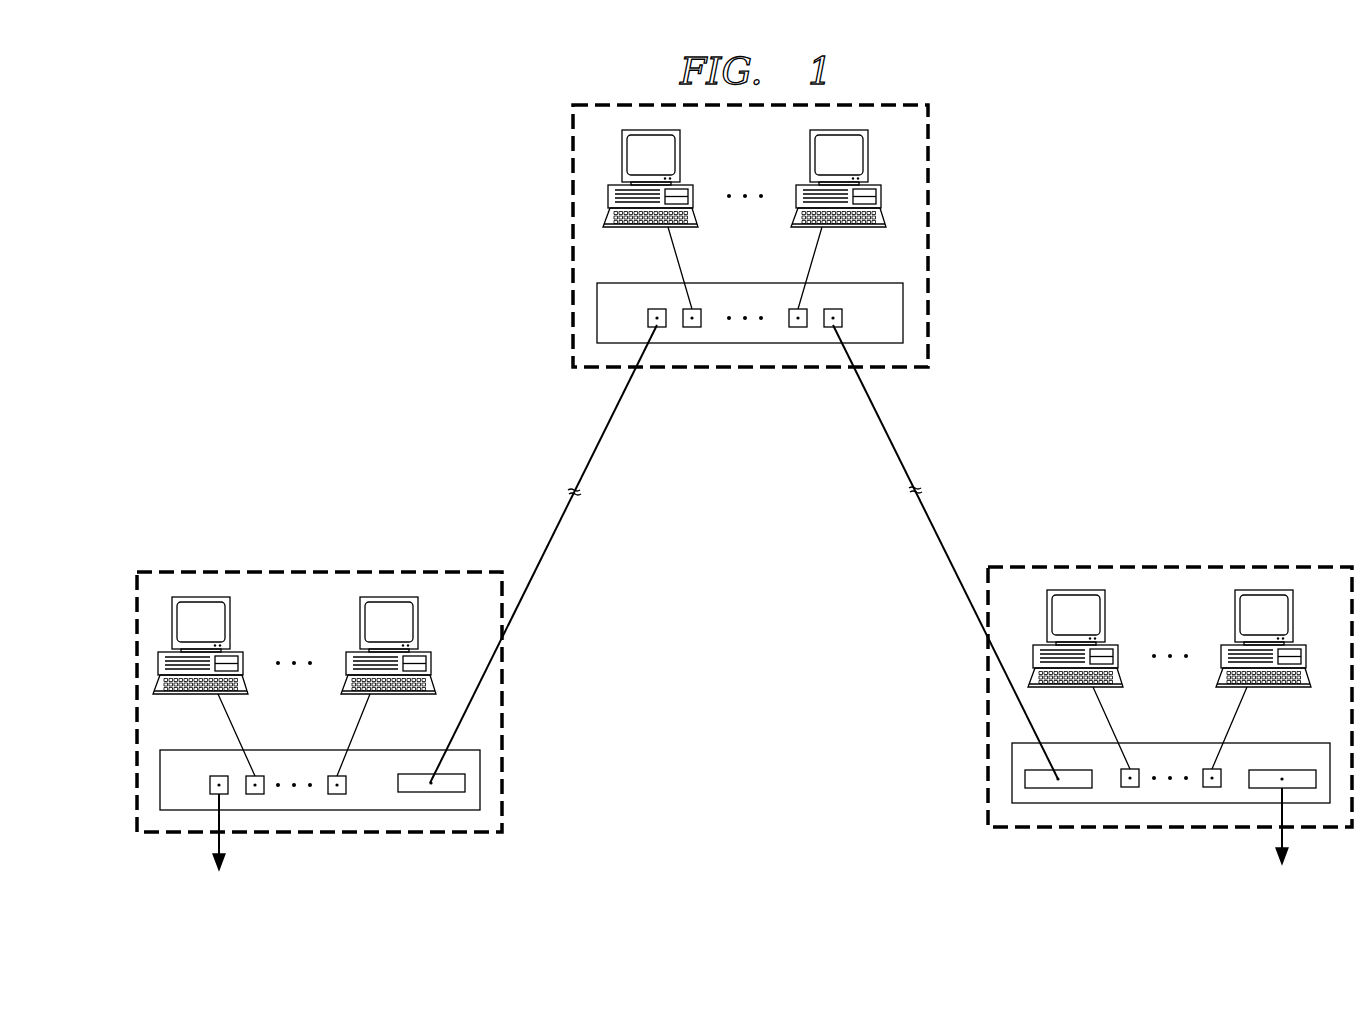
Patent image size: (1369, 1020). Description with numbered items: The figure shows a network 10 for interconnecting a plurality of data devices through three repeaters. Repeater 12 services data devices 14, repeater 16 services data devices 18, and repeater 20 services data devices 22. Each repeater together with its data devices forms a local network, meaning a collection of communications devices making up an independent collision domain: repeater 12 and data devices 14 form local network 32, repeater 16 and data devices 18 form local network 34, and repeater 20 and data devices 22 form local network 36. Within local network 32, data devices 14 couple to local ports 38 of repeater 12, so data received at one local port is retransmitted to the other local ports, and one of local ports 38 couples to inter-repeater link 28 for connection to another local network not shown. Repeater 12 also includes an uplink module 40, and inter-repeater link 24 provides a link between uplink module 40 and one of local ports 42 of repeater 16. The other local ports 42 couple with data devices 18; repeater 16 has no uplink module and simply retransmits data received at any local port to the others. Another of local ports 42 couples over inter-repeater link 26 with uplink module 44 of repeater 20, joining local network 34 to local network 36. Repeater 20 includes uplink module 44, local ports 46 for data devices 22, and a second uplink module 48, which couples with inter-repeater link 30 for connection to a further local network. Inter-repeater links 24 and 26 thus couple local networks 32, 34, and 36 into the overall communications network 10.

The network 10 is at (382, 128).
The repeater 12 is at (390, 750).
The data devices 14 is at (231, 617).
The repeater 16 is at (885, 283).
The data devices 18 is at (681, 150).
The repeater 20 is at (1280, 743).
The data devices 22 is at (1108, 610).
The inter-repeater link 24 is at (555, 538).
The inter-repeater link 26 is at (934, 532).
The inter-repeater link 28 is at (217, 845).
The inter-repeater link 30 is at (1285, 840).
The local network 32 is at (230, 560).
The local network 34 is at (888, 96).
The local network 36 is at (1256, 551).
The local ports 38 is at (217, 776).
The uplink module 40 is at (447, 792).
The local ports 42 is at (654, 309).
The uplink module 44 is at (1040, 788).
The local ports 46 is at (1134, 769).
The uplink module 48 is at (1258, 788).